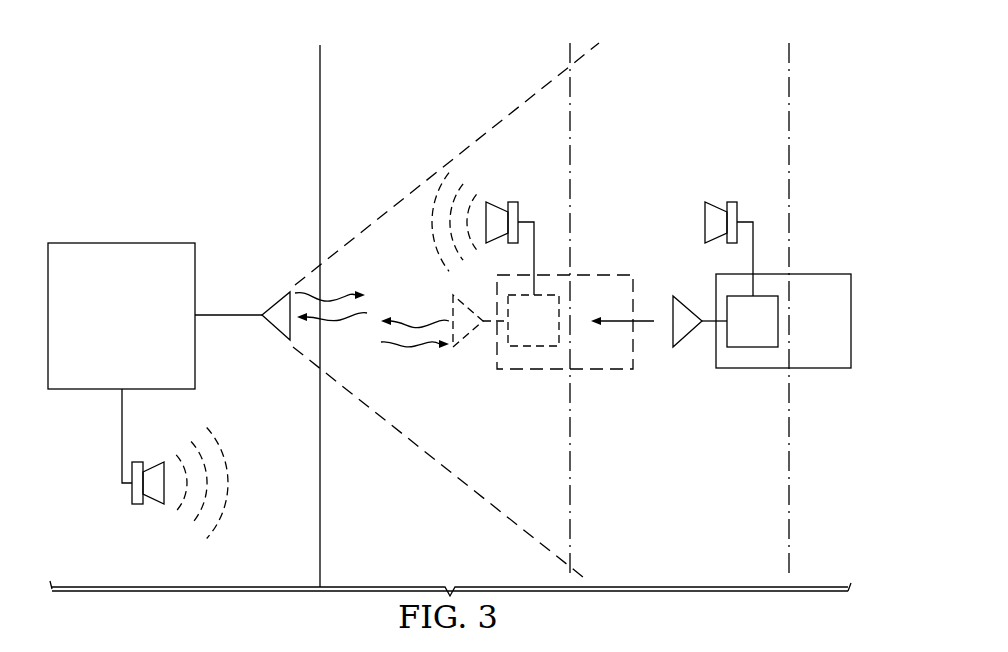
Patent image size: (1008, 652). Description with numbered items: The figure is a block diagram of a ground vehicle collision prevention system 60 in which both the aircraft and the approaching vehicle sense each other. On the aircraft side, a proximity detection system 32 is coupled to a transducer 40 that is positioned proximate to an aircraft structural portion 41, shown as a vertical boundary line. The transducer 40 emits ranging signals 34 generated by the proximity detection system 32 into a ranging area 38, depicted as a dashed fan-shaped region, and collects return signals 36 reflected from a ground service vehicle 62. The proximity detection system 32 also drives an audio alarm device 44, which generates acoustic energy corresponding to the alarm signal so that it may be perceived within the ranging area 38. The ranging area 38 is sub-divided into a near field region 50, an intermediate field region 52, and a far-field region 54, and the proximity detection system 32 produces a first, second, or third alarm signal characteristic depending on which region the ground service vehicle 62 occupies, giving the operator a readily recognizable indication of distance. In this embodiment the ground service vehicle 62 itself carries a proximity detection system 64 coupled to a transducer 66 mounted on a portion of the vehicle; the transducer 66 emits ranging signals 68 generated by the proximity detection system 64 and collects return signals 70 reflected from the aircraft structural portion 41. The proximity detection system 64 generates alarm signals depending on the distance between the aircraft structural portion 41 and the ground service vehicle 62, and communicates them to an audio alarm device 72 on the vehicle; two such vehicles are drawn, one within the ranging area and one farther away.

The ground vehicle collision prevention system 60 is at (161, 59).
The proximity detection system 32 is at (134, 330).
The transducer 40 is at (278, 331).
The aircraft structural portion 41 is at (318, 65).
The ranging area 38 is at (554, 78).
The ranging signals 34 is at (342, 293).
The return signals 36 is at (340, 322).
The ranging signals 68 is at (418, 326).
The return signals 70 is at (415, 348).
The transducer 66 is at (460, 348).
The proximity detection system 64 is at (533, 348).
The ground service vehicle 62 is at (602, 370).
The audio alarm device 72 is at (514, 202).
The audio alarm device 44 is at (137, 505).
The near field region 50 is at (545, 487).
The intermediate field region 52 is at (690, 487).
The far-field region 54 is at (853, 487).